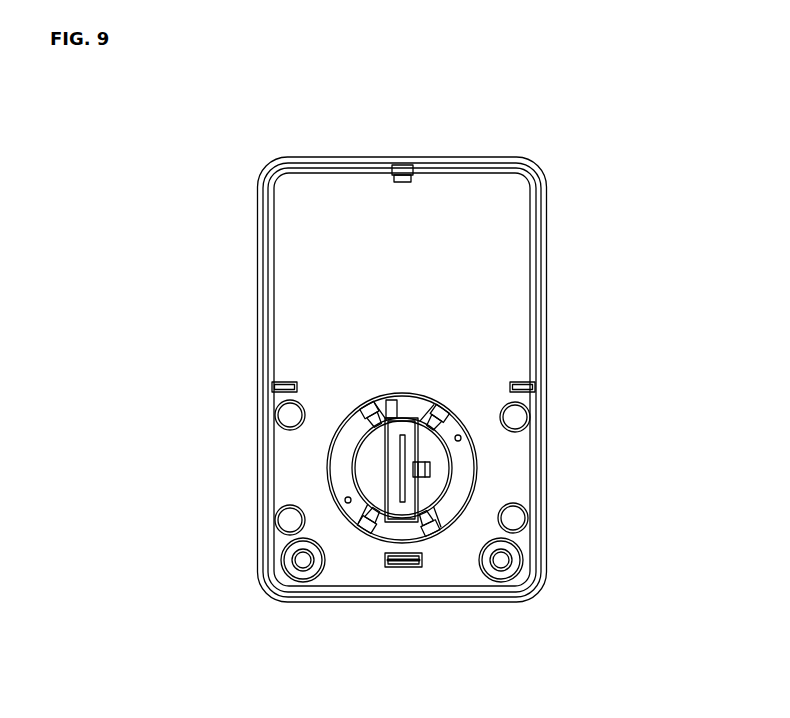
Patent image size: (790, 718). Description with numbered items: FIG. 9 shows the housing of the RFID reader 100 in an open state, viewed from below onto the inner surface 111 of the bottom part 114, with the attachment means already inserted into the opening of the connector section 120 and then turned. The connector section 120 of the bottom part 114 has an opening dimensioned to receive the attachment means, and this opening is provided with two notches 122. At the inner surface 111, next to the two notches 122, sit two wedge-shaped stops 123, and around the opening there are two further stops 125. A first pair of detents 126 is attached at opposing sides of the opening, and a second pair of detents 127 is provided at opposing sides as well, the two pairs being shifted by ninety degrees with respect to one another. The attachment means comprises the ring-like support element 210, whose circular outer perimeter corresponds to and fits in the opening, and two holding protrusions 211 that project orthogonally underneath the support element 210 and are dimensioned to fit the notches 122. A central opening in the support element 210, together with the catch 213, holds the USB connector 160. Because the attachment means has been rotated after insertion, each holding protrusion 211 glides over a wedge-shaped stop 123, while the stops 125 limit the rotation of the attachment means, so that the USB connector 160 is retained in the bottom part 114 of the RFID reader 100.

The RFID reader 100 is at (603, 173).
The inner surface 111 is at (324, 198).
The bottom part 114 is at (482, 160).
The connector section 120 is at (472, 508).
The notches 122 is at (437, 415).
The stops 123 is at (457, 437).
The stops 125 is at (390, 425).
The first pair of detents 126 is at (347, 498).
The second pair of detents 127 is at (373, 418).
The USB connector 160 is at (403, 420).
The support element 210 is at (357, 422).
The holding protrusions 211 is at (378, 427).
The catch 213 is at (430, 474).